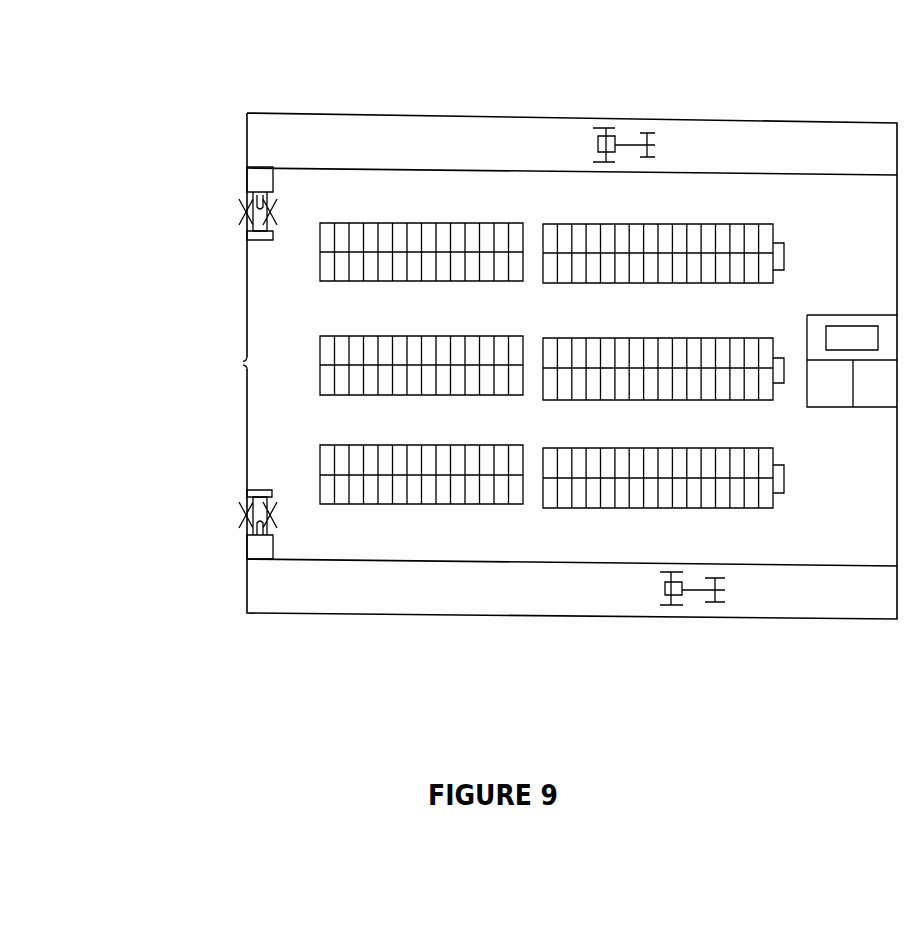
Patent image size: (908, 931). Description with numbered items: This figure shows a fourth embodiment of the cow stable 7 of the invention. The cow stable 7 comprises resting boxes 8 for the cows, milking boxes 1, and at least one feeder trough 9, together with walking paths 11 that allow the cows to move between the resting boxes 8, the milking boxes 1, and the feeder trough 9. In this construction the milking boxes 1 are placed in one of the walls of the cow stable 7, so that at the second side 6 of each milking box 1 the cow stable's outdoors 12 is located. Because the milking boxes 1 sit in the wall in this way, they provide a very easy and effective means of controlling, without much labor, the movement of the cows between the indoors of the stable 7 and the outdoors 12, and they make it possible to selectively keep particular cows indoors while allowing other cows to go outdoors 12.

The milking box 1 is at (287, 242).
The second side 6 is at (226, 216).
The cow stable 7 is at (626, 639).
The resting box 8 is at (552, 365).
The feeder trough 9 is at (510, 155).
The walking path 11 is at (573, 367).
The outdoors 12 is at (185, 357).